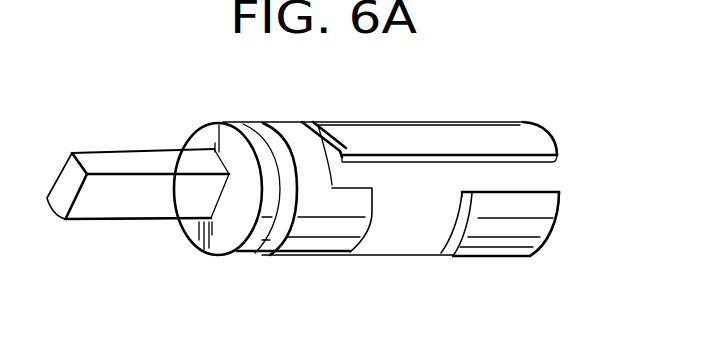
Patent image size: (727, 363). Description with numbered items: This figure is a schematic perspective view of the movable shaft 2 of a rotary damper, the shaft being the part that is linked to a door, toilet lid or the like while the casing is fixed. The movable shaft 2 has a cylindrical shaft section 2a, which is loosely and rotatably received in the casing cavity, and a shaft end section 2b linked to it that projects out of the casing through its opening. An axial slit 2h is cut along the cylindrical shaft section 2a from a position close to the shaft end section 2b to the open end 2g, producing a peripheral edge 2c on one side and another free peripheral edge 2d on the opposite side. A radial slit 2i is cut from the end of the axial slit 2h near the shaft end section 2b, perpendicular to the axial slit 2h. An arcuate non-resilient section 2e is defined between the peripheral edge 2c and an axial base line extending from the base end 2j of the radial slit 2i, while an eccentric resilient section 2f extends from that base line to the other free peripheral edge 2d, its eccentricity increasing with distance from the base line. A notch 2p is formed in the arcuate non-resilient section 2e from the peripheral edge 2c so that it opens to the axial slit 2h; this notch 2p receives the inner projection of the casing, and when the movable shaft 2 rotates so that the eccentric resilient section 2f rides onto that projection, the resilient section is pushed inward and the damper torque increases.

The movable shaft 2 is at (116, 148).
The cylindrical shaft section 2a is at (477, 268).
The shaft end section 2b is at (114, 224).
The peripheral edge 2c is at (517, 190).
The other free peripheral edge 2d is at (517, 153).
The arcuate non-resilient section 2e is at (312, 238).
The eccentric resilient section 2f is at (427, 137).
The open end 2g is at (471, 192).
The axial slit 2h is at (542, 173).
The radial slit 2i is at (338, 138).
The base end of the radial slit 2j is at (293, 120).
The notch 2p is at (408, 235).